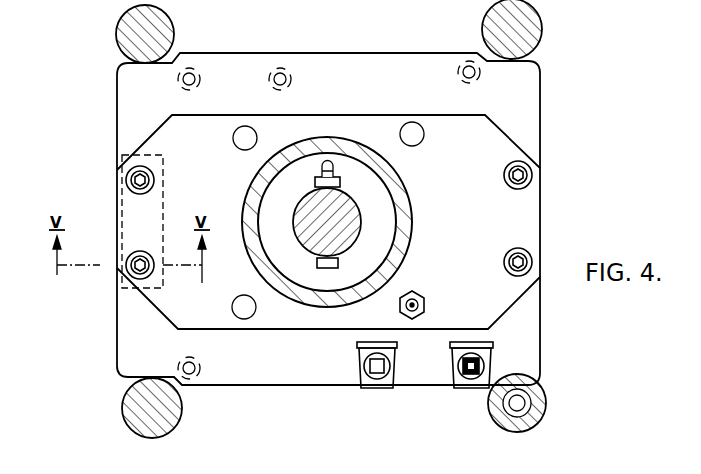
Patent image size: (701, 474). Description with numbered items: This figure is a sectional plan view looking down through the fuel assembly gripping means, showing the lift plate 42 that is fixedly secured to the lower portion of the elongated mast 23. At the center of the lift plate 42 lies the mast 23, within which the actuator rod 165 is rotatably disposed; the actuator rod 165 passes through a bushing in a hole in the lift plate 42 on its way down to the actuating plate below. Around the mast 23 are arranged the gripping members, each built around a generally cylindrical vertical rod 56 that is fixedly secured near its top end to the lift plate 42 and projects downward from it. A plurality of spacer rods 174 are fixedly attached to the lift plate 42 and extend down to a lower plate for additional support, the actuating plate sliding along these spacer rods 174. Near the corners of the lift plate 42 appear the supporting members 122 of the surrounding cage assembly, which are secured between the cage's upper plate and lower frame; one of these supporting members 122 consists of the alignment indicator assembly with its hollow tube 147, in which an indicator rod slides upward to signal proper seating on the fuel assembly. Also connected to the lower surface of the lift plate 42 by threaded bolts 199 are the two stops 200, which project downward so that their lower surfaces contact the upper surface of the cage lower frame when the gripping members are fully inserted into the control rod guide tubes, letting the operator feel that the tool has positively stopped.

The elongated mast 23 is at (397, 186).
The lift plate 42 is at (528, 115).
The vertical rod 56 is at (291, 78).
The supporting members 122 is at (118, 26).
The hollow tube 147 is at (545, 400).
The actuator rod 165 is at (353, 222).
The spacer rods 174 is at (233, 138).
The threaded bolts 199 is at (138, 201).
The stops 200 is at (163, 188).